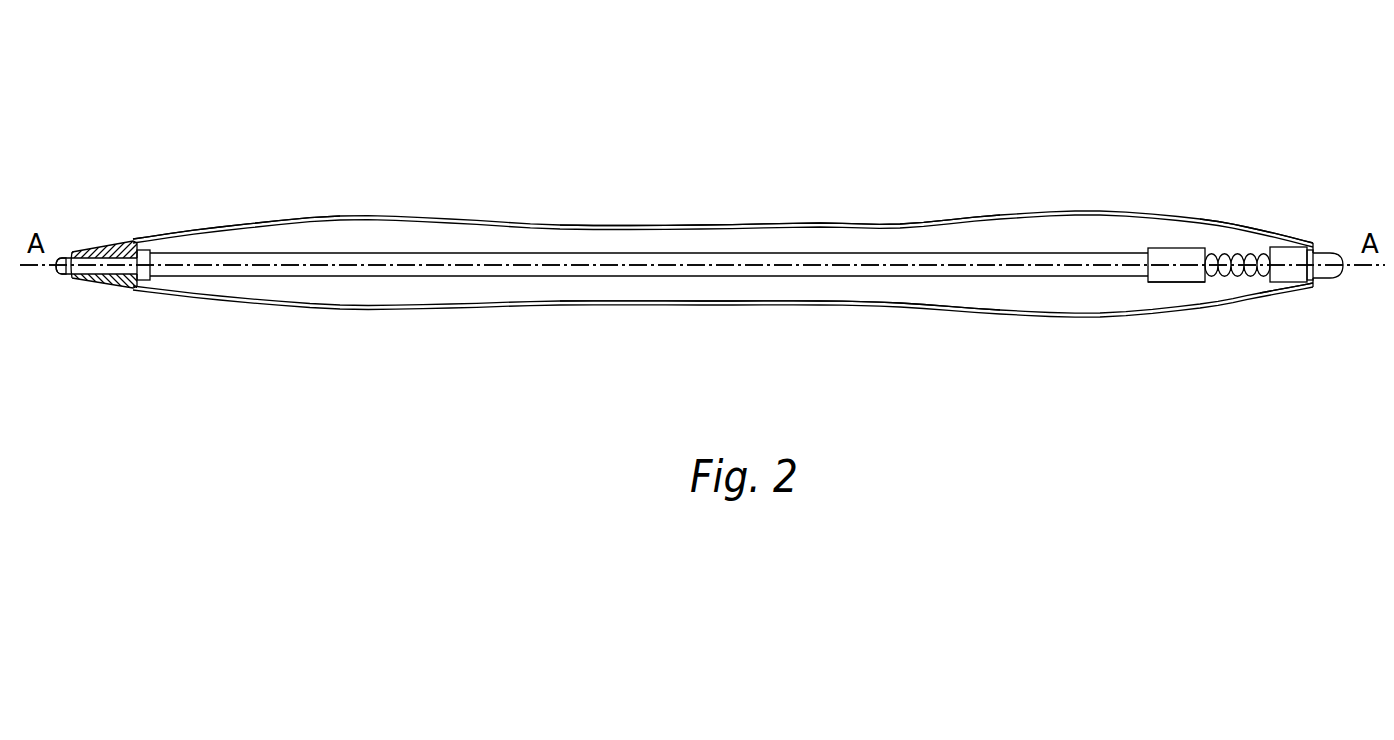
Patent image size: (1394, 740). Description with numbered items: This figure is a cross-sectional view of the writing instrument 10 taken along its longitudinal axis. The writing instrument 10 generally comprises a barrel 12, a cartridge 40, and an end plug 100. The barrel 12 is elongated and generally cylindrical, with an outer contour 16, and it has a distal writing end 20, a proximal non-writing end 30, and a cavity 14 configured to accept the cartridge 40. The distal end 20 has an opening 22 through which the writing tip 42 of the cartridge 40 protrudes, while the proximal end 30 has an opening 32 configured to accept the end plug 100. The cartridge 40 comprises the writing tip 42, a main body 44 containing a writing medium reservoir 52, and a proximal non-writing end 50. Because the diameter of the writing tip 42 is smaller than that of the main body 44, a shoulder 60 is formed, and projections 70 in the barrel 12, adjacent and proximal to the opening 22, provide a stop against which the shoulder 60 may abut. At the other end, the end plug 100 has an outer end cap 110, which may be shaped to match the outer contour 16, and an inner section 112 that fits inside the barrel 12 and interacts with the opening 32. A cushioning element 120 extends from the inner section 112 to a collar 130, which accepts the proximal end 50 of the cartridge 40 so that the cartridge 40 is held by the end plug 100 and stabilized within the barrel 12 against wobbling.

The writing instrument 10 is at (793, 122).
The barrel 12 is at (342, 216).
The cavity 14 is at (340, 310).
The outer contour 16 is at (877, 308).
The distal writing end 20 is at (77, 249).
The opening 22 is at (65, 280).
The proximal non-writing end 30 is at (1272, 234).
The opening 32 is at (1308, 289).
The cartridge 40 is at (653, 278).
The writing tip 42 is at (60, 250).
The main body 44 is at (215, 250).
The proximal non-writing end 50 is at (1146, 250).
The writing medium reservoir 52 is at (632, 263).
The shoulder 60 is at (140, 247).
The projections 70 is at (130, 287).
The end plug 100 is at (1328, 282).
The outer end cap 110 is at (1320, 243).
The inner section 112 is at (1290, 282).
The cushioning element 120 is at (1213, 251).
The collar 130 is at (1170, 282).